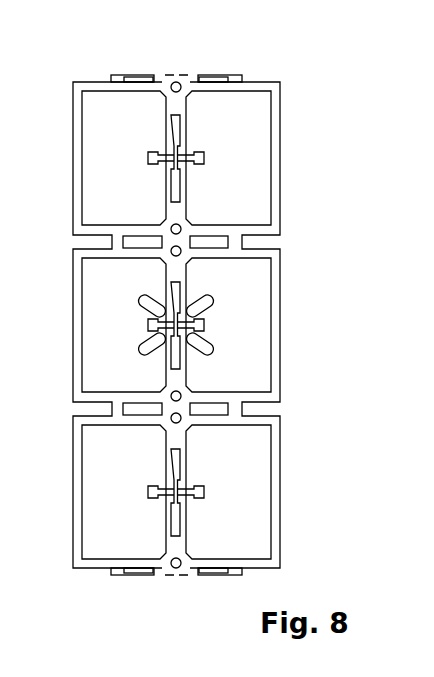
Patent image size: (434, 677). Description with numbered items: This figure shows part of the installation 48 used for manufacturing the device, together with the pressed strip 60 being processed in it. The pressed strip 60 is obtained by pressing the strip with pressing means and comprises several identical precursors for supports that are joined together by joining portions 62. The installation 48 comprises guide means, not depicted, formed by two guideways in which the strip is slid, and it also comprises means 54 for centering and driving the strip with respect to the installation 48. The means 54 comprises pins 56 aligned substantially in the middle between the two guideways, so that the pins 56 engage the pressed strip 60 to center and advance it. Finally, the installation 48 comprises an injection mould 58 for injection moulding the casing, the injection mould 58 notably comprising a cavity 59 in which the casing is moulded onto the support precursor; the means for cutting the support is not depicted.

The installation 48 is at (68, 91).
The pressed strip 60 is at (272, 72).
The means for centering and driving the strip 54 is at (163, 225).
The pins 56 is at (182, 224).
The injection mould 58 is at (104, 298).
The cavity 59 is at (208, 302).
The joining portions 62 is at (118, 247).